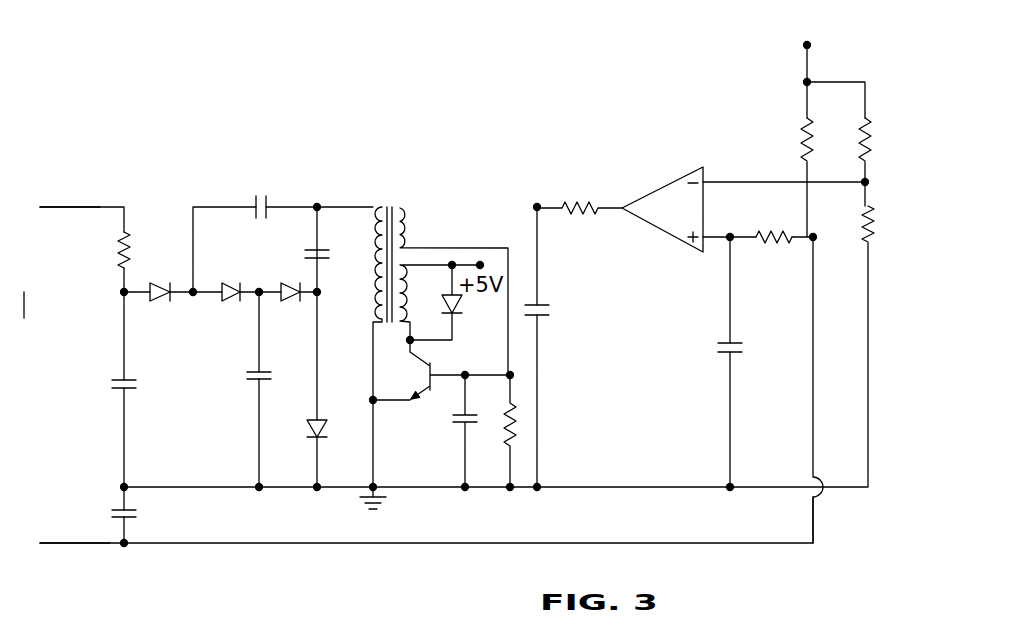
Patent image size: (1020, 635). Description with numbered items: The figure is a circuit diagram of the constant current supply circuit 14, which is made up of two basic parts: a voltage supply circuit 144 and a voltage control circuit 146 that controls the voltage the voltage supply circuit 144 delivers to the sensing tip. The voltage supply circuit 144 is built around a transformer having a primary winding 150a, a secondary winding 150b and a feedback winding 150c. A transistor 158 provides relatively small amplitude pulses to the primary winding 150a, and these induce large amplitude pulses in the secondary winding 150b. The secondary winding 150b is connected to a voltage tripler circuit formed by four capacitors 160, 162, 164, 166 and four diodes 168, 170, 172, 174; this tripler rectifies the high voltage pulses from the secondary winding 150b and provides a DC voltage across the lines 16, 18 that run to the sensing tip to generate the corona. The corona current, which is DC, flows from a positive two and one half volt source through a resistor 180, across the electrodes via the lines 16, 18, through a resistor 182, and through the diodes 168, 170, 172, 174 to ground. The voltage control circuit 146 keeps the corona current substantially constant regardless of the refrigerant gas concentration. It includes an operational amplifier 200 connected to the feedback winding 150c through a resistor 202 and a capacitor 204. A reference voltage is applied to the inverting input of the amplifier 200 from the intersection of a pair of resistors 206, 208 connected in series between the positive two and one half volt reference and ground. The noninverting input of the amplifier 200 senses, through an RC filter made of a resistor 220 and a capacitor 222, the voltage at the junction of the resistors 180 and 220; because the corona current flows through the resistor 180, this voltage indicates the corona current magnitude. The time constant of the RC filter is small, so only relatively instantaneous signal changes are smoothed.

The constant current supply circuit 14 is at (147, 146).
The line 16 is at (85, 205).
The line 18 is at (70, 548).
The voltage supply circuit 144 is at (394, 147).
The voltage control circuit 146 is at (687, 129).
The primary winding 150a is at (404, 262).
The secondary winding 150b is at (384, 206).
The feedback winding 150c is at (399, 205).
The transistor 158 is at (430, 388).
The capacitor 160 is at (112, 386).
The capacitor 162 is at (252, 380).
The capacitor 164 is at (254, 204).
The capacitor 166 is at (310, 250).
The diode 168 is at (166, 302).
The diode 170 is at (230, 302).
The diode 172 is at (292, 302).
The diode 174 is at (326, 428).
The resistor 180 is at (800, 146).
The resistor 182 is at (117, 254).
The operational amplifier 200 is at (643, 188).
The resistor 202 is at (574, 216).
The capacitor 204 is at (548, 320).
The resistor 206 is at (873, 135).
The resistor 208 is at (877, 232).
The resistor 220 is at (762, 243).
The capacitor 222 is at (735, 354).